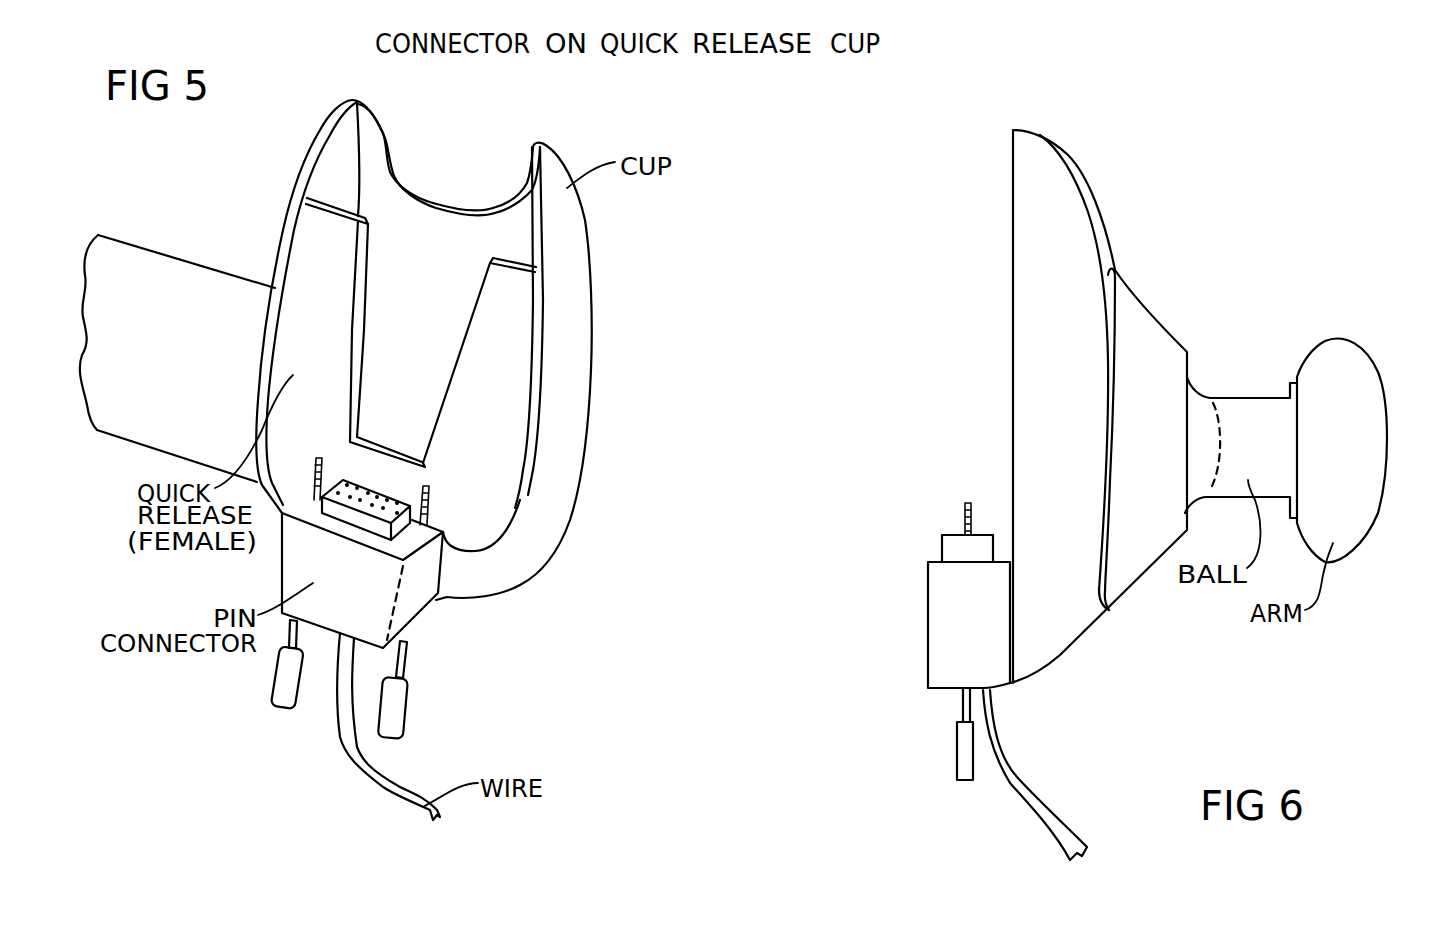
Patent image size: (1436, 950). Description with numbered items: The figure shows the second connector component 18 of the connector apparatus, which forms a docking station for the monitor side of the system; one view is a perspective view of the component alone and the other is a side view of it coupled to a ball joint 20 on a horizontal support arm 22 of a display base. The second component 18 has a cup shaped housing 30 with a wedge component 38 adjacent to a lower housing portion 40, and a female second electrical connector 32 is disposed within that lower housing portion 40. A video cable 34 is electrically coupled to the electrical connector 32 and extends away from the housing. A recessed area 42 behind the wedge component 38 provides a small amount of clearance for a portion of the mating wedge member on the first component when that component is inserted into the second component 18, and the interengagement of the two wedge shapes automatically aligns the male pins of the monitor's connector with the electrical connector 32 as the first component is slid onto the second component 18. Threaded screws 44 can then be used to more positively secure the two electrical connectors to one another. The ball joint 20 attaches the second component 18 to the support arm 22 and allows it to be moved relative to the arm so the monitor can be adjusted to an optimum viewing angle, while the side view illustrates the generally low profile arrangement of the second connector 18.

In FIG. 5, the second connector component 18 is at (329, 121).
In FIG. 6, the second connector component 18 is at (918, 681).
In FIG. 6, the ball joint 20 is at (1250, 410).
In FIG. 5, the support arm 22 is at (178, 277).
In FIG. 6, the support arm 22 is at (1345, 360).
In FIG. 5, the cup shaped housing 30 is at (572, 208).
In FIG. 6, the cup shaped housing 30 is at (1042, 653).
In FIG. 5, the second electrical connector 32 is at (380, 520).
In FIG. 6, the second electrical connector 32 is at (953, 540).
In FIG. 5, the video cable 34 is at (360, 762).
In FIG. 6, the video cable 34 is at (1013, 797).
In FIG. 5, the wedge component 38 is at (510, 333).
In FIG. 5, the lower housing portion 40 is at (380, 597).
In FIG. 6, the lower housing portion 40 is at (947, 615).
In FIG. 5, the recessed area 42 is at (391, 217).
In FIG. 5, the threaded screws 44 is at (283, 688).
In FIG. 6, the threaded screws 44 is at (960, 757).